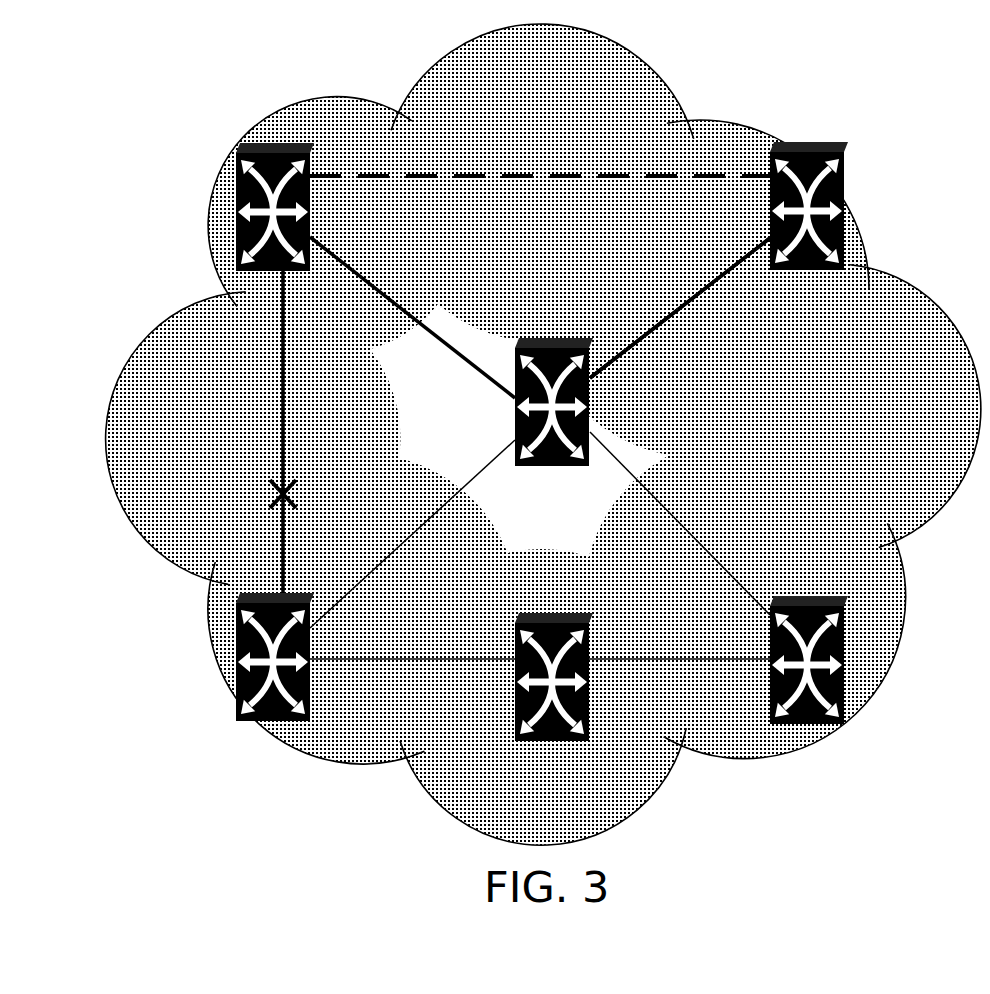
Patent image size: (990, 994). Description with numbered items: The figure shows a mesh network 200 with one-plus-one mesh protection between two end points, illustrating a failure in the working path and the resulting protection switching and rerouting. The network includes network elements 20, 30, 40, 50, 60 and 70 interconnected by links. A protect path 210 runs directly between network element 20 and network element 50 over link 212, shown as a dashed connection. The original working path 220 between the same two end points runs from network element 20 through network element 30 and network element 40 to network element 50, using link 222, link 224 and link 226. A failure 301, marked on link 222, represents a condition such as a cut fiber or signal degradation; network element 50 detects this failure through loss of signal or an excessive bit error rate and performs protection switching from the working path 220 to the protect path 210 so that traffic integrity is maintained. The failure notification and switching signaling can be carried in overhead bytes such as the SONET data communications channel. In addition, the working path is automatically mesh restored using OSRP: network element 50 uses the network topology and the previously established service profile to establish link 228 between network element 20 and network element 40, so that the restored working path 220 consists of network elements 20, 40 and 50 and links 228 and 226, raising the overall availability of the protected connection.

The network element 20 is at (236, 214).
The network element 30 is at (235, 667).
The network element 40 is at (515, 424).
The network element 50 is at (844, 173).
The router 60 is at (550, 744).
The router 70 is at (812, 725).
The mesh network 200 is at (922, 637).
The protect path 210 is at (735, 152).
The link 212 is at (520, 177).
The working path 220 is at (735, 280).
The link 222 is at (281, 424).
The link 224 is at (461, 494).
The link 226 is at (666, 320).
The link 228 is at (406, 312).
The failure 301 is at (276, 508).